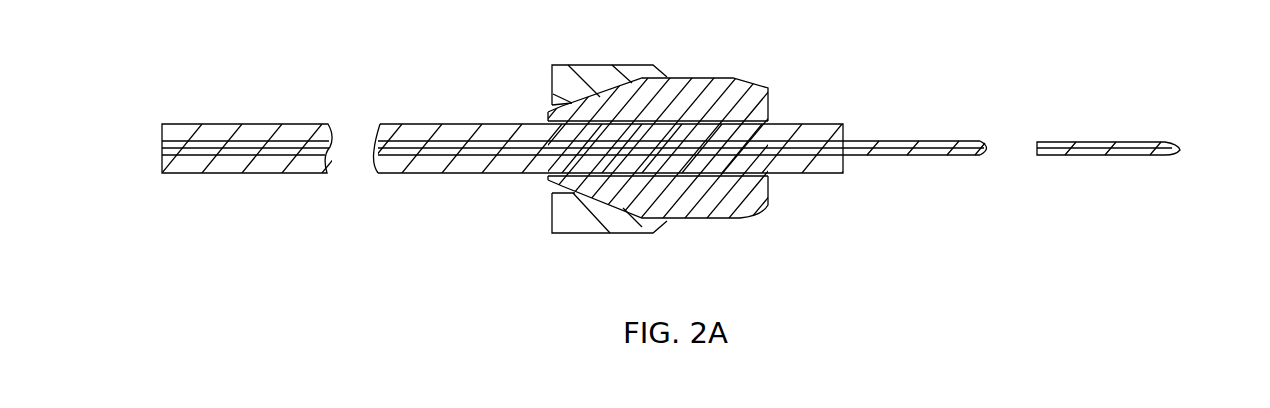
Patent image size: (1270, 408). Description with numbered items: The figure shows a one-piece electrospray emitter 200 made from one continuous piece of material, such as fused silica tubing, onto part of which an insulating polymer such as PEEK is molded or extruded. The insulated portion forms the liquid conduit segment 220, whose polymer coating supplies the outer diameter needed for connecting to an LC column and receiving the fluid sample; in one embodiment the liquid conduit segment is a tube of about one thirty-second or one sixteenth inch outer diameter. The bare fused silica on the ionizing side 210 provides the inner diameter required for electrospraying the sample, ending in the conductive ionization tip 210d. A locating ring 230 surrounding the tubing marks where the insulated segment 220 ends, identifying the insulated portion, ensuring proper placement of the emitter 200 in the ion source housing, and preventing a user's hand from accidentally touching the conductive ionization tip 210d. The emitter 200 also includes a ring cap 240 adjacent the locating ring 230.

The one-piece electrospray emitter 200 is at (504, 94).
The ionizing side 210 is at (947, 138).
The ionization tip 210d is at (1172, 130).
The liquid conduit segment 220 is at (301, 164).
The locating ring 230 is at (753, 204).
The ring cap 240 is at (563, 222).